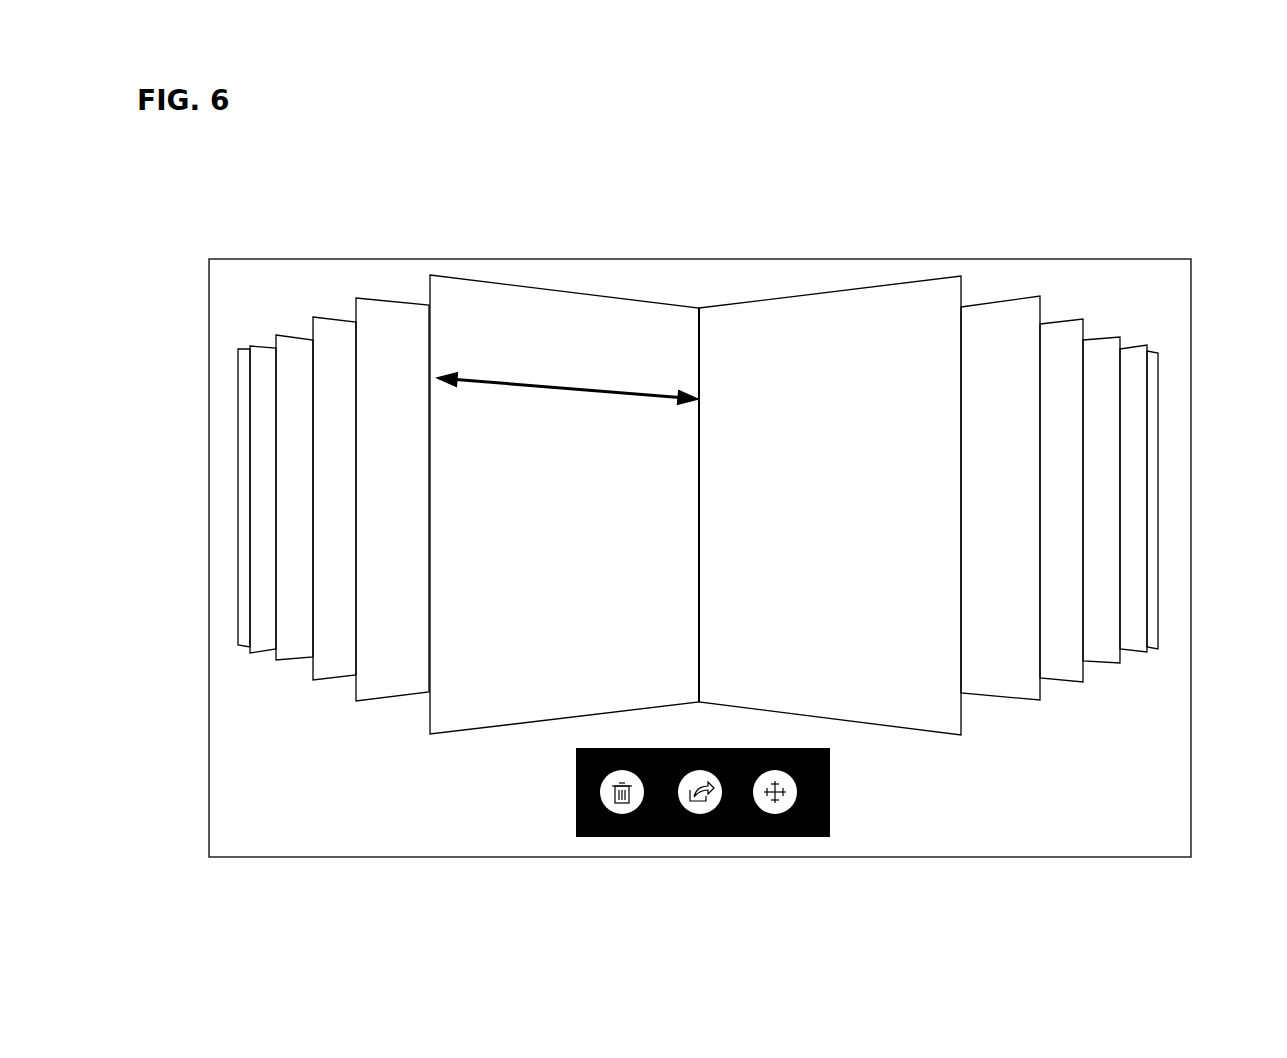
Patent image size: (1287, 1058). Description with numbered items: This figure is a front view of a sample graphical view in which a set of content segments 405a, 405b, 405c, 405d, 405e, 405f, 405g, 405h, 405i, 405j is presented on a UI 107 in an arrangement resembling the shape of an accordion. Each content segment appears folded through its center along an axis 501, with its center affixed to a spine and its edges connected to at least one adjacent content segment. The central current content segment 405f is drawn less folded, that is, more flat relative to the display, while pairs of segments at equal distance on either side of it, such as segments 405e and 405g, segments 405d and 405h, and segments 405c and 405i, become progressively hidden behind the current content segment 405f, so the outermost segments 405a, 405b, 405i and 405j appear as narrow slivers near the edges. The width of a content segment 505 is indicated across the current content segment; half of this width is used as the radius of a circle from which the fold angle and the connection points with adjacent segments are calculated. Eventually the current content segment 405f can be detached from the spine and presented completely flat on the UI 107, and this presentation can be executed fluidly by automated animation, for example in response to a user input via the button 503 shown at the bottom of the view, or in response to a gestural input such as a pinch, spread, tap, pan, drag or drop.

The UI 107 is at (722, 268).
The content segment 405a is at (241, 661).
The content segment 405b is at (262, 357).
The content segment 405c is at (296, 358).
The content segment 405d is at (328, 323).
The content segment 405e is at (383, 323).
The current content segment 405f is at (535, 288).
The content segment 405g is at (1005, 312).
The content segment 405h is at (1059, 321).
The content segment 405i is at (1103, 348).
The content segment 405j is at (1145, 348).
The axis 501 is at (700, 486).
The button 503 is at (688, 825).
The width of the content segment 505 is at (502, 382).